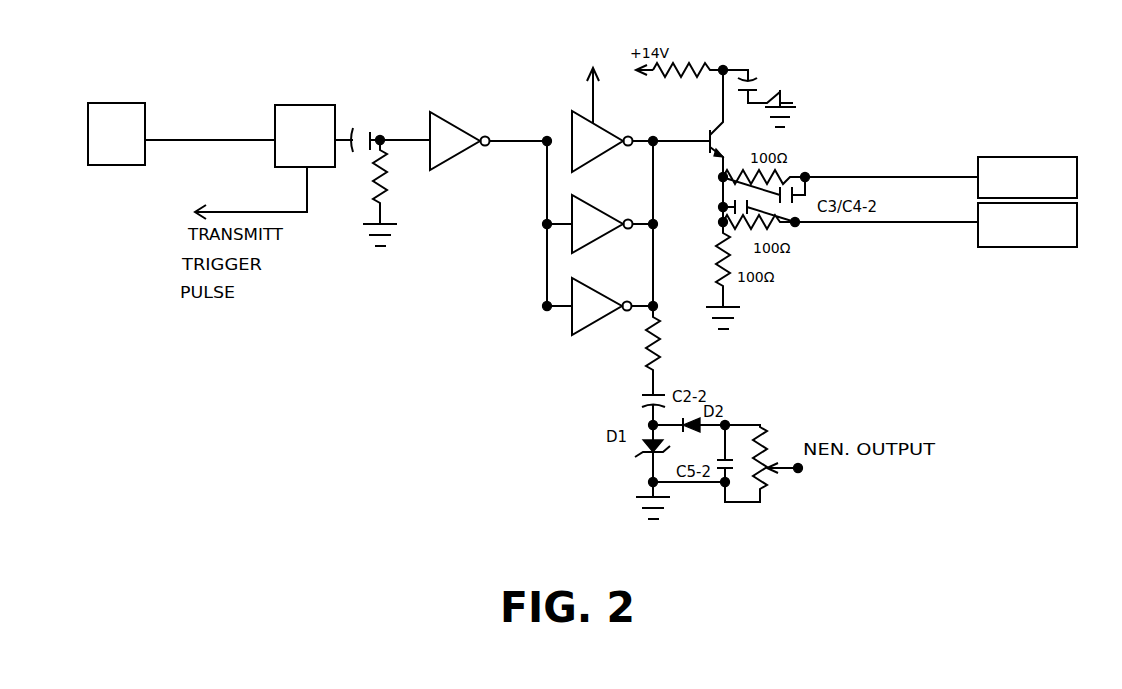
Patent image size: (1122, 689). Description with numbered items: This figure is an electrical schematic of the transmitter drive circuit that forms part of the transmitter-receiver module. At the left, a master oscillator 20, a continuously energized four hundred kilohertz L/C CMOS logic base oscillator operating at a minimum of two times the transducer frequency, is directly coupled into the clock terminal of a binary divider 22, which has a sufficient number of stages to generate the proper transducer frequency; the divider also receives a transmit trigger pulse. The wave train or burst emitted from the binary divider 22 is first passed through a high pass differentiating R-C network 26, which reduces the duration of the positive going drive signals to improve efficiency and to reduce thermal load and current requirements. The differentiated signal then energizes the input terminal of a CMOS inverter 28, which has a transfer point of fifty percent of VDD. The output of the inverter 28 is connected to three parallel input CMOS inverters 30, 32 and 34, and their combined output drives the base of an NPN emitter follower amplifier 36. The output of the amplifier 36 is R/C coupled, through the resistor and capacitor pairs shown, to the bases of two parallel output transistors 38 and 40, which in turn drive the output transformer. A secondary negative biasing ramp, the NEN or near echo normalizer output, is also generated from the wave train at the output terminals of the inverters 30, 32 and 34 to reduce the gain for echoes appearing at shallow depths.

The master oscillator 20 is at (130, 103).
The binary divider 22 is at (303, 105).
The high pass differentiating R-C network 26 is at (358, 140).
The CMOS inverter 28 is at (455, 168).
The CMOS inverter 30 is at (605, 153).
The CMOS inverter 32 is at (607, 237).
The CMOS inverter 34 is at (597, 322).
The NPN emitter follower amplifier 36 is at (710, 137).
The output transistor 38 is at (1048, 157).
The output transistor 40 is at (1053, 247).